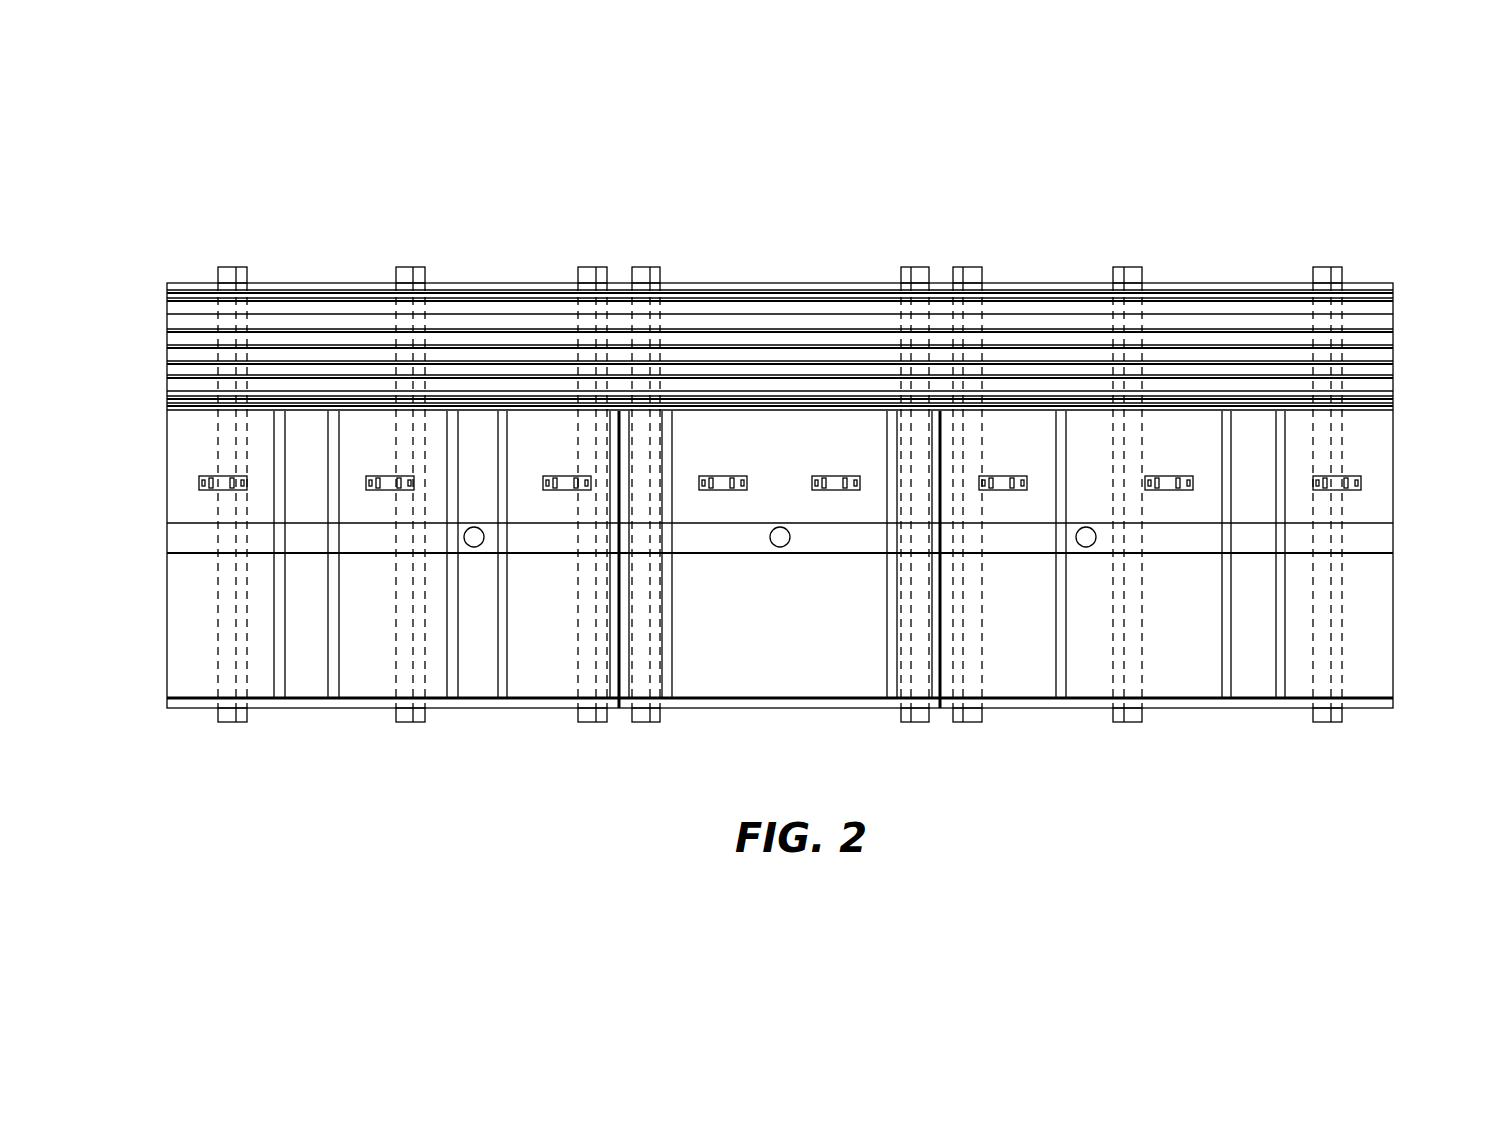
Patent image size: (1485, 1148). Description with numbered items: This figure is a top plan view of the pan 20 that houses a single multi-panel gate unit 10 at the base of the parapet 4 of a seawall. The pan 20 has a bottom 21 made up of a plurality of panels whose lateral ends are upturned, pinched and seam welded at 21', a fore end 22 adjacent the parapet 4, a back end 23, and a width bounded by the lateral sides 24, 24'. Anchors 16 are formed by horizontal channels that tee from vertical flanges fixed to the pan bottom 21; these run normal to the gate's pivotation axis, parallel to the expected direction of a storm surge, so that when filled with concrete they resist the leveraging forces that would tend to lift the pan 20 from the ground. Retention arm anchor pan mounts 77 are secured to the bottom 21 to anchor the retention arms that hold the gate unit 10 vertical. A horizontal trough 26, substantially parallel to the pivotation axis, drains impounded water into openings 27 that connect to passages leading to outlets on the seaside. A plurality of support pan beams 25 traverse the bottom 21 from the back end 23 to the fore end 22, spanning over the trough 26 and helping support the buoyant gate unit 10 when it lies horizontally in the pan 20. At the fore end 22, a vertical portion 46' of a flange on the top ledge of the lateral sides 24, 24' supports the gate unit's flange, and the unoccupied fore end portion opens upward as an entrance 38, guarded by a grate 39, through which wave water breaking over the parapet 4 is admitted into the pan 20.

The pan 20 is at (1222, 140).
The anchors 16 is at (233, 266).
The entrance 38 is at (1374, 308).
The grate 39 is at (1360, 330).
The fore end 22 is at (1393, 407).
The vertical portion of flange 46' is at (135, 411).
The lateral side 24 is at (698, 554).
The lateral side 24' is at (1430, 628).
The retention arm anchor pan mounts 77 is at (212, 480).
The openings 27 is at (475, 527).
The trough 26 is at (833, 537).
The bottom 21 is at (780, 625).
The seam weld 21' is at (781, 559).
The back end 23 is at (1393, 705).
The support pan beams 25 is at (333, 690).
The parapet 4 is at (763, 276).
The multi-panel gate unit 10 is at (160, 586).